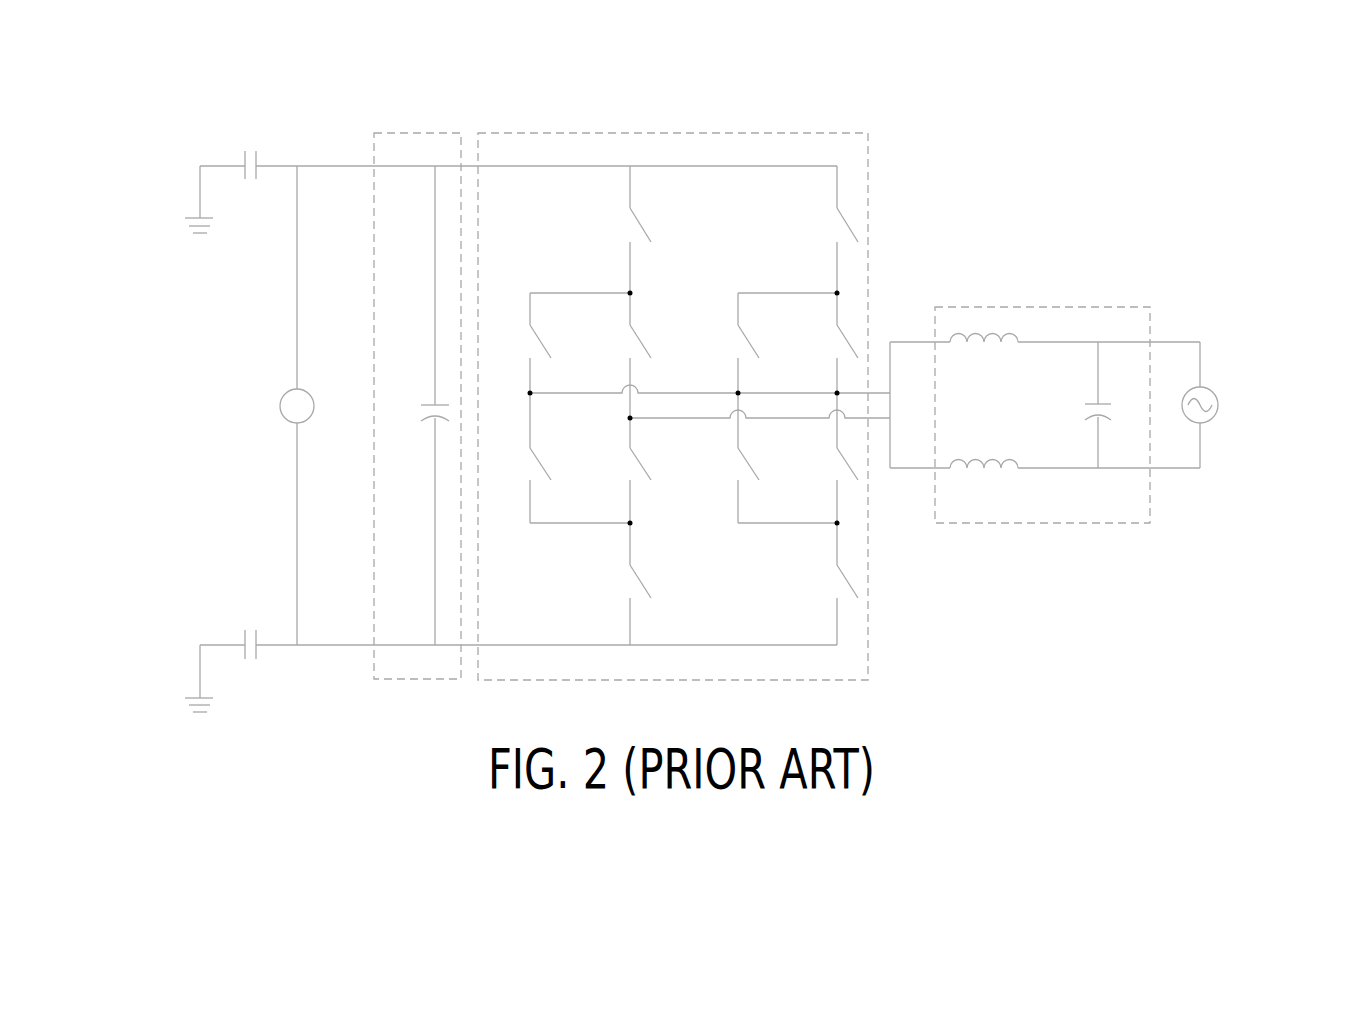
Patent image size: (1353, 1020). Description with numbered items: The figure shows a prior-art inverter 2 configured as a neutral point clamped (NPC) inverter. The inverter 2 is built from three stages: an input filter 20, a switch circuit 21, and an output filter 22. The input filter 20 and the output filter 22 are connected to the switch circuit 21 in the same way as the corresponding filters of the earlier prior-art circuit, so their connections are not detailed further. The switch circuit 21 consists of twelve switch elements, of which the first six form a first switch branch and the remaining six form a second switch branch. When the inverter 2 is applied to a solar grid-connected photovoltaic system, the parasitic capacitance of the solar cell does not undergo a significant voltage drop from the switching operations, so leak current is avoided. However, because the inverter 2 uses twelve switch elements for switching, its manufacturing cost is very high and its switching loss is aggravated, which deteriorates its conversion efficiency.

The inverter 2 is at (1108, 171).
The input filter 20 is at (425, 133).
The switch circuit 21 is at (652, 133).
The output filter 22 is at (1043, 307).